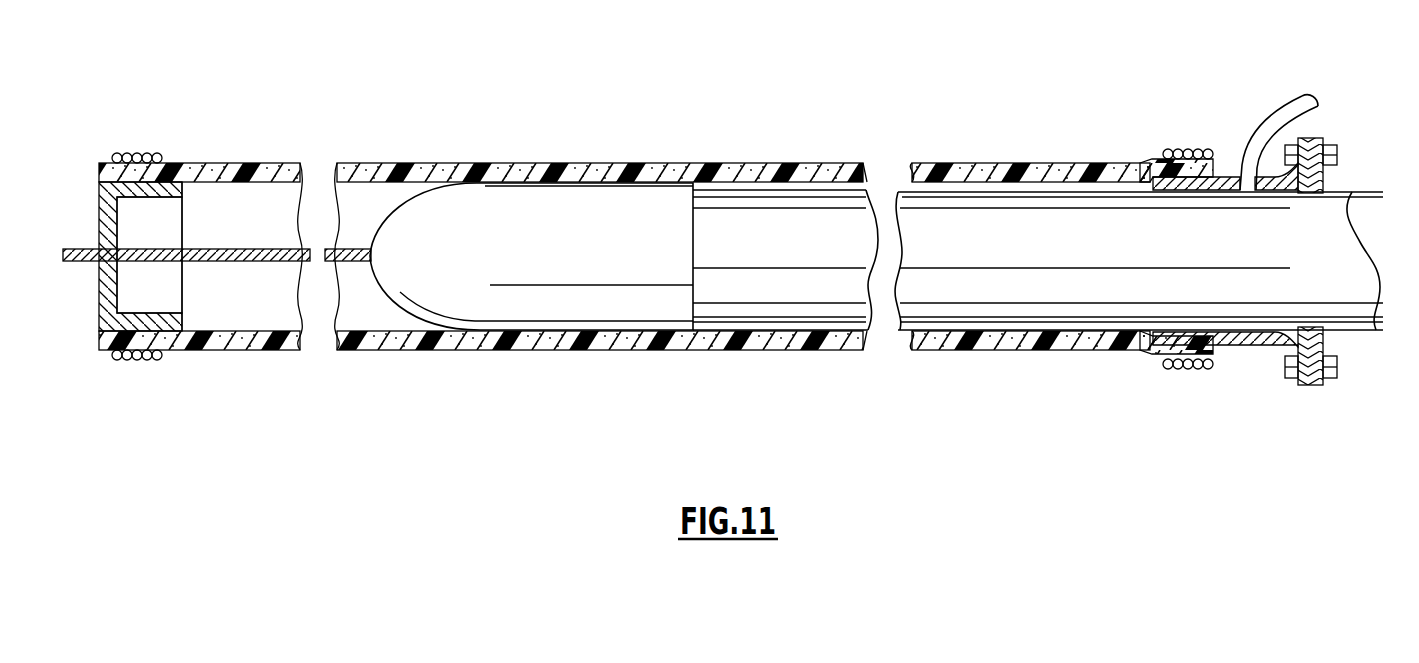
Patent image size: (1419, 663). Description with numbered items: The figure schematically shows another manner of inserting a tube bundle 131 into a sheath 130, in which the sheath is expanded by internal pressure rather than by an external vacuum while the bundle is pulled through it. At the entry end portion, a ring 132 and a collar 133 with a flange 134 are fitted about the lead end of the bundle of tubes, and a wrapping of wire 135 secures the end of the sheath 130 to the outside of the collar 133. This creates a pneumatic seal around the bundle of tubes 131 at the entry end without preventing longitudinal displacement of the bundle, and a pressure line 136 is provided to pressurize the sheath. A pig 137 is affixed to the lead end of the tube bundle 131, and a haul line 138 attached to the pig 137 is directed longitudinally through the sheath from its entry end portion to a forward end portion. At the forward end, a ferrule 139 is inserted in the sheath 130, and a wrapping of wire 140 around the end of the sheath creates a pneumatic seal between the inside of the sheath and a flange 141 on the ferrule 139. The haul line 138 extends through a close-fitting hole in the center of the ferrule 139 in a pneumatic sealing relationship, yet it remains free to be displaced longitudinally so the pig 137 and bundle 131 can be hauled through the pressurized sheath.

The sheath 130 is at (674, 162).
The tube bundle 131 is at (820, 197).
The ring 132 is at (1324, 184).
The collar 133 is at (1254, 347).
The flange 134 is at (1312, 138).
The wrapping of wire 135 is at (1182, 150).
The pressure line 136 is at (1286, 105).
The pig 137 is at (540, 197).
The haul line 138 is at (280, 262).
The ferrule 139 is at (99, 195).
The wrapping of wire 140 is at (143, 155).
The flange 141 is at (161, 189).